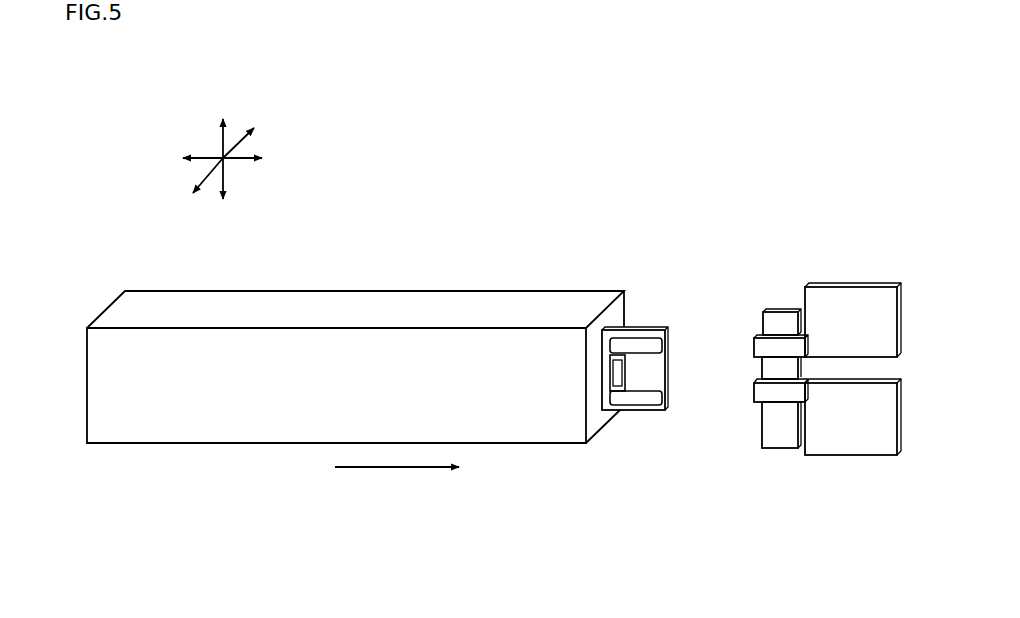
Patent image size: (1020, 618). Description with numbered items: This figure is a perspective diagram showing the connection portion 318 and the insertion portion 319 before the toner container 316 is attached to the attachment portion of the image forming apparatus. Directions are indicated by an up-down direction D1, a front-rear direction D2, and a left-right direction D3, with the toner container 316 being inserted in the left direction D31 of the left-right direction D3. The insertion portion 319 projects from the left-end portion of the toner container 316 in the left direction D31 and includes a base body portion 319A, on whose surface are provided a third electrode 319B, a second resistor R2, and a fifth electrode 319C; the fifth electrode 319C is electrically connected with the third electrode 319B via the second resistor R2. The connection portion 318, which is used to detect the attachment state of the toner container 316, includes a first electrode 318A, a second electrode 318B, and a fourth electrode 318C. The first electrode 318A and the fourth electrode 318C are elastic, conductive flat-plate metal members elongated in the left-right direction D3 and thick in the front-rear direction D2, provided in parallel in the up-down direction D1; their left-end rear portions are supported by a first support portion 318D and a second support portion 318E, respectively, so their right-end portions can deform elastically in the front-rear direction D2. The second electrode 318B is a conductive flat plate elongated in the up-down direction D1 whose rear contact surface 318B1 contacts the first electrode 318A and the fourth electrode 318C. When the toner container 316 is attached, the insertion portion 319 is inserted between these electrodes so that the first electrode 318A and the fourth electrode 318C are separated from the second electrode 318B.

The toner container 316 is at (337, 310).
The insertion portion 319 is at (590, 385).
The base body portion 319A is at (602, 342).
The third electrode 319B is at (647, 338).
The fifth electrode 319C is at (647, 406).
The second resistor R2 is at (610, 370).
The connection portion 318 is at (789, 353).
The first electrode 318A is at (754, 343).
The second electrode 318B is at (778, 312).
The contact surface 318B1 is at (778, 433).
The fourth electrode 318C is at (754, 397).
The first support portion 318D is at (853, 287).
The second support portion 318E is at (848, 456).
The up-down direction D1 is at (219, 148).
The front-rear direction D2 is at (243, 128).
The left-right direction D3 is at (237, 164).
The left direction D31 is at (397, 470).